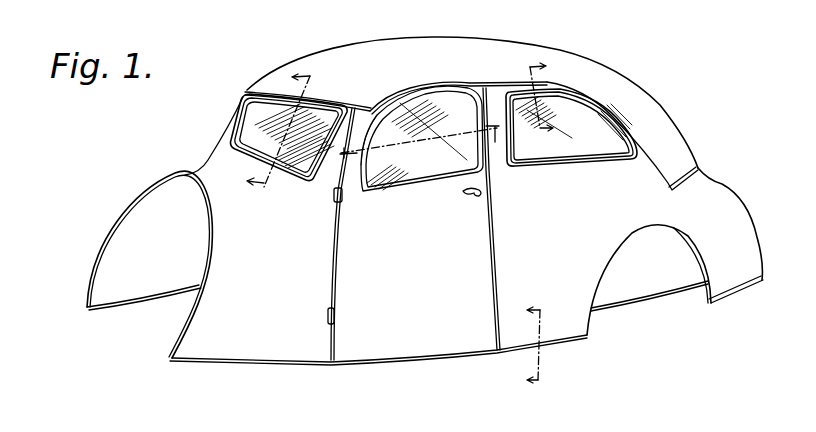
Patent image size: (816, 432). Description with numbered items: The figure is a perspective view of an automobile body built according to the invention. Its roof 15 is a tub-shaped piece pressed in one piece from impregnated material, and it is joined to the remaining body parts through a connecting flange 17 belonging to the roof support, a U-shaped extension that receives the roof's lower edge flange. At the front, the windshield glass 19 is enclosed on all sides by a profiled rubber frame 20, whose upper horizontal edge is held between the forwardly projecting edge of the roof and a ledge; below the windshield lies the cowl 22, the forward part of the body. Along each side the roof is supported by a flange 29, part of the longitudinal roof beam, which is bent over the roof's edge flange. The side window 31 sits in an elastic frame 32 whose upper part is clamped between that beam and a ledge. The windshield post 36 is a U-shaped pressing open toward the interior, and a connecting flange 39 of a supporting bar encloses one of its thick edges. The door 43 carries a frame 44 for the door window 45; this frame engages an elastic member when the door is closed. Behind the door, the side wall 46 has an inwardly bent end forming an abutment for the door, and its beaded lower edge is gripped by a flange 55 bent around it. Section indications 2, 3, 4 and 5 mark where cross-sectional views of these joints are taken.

The section line 2- 2 is at (279, 134).
The section line 3- 3 is at (537, 98).
The section line 4- 4 is at (417, 132).
The section line 5- 5 is at (539, 344).
The roof 15 is at (390, 57).
The connecting flange 17 is at (353, 119).
The windshield glass 19 is at (250, 120).
The profiled rubber frame 20 is at (250, 92).
The cowl 22 is at (203, 169).
The flange 29 is at (553, 85).
The side window 31 is at (593, 142).
The elastic frame 32 is at (540, 162).
The windshield post 36 is at (358, 118).
The connecting flange 39 is at (337, 173).
The door 43 is at (415, 224).
The frame 44 is at (353, 178).
The door window 45 is at (433, 162).
The side wall 46 is at (570, 313).
The flange 55 is at (557, 343).